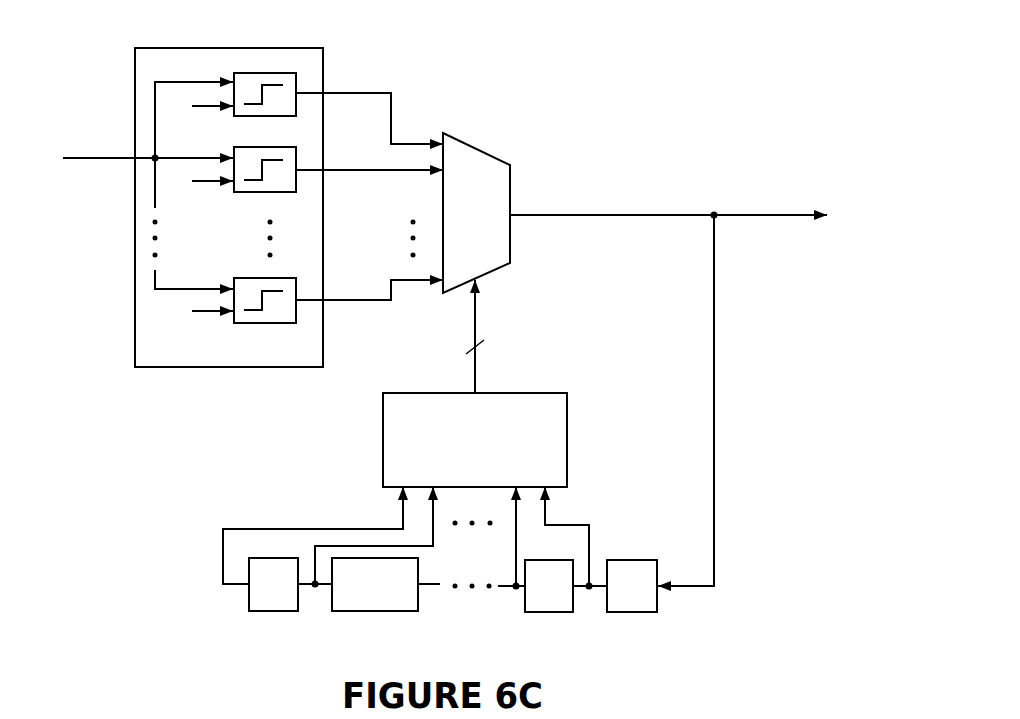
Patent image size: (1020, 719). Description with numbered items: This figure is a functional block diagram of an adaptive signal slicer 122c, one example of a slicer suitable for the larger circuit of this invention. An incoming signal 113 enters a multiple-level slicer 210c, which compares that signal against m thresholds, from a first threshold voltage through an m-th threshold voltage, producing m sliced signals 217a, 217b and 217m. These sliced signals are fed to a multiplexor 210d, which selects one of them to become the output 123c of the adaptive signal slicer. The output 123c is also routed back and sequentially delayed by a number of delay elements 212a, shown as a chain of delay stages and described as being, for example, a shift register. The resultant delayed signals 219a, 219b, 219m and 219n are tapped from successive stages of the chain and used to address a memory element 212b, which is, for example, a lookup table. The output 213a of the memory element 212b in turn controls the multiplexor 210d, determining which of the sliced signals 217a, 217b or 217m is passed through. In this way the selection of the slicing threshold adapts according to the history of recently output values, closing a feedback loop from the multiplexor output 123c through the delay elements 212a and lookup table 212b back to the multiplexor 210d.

The input signal line 113 is at (96, 156).
The multiple-level slicer 210c is at (200, 47).
The sliced signal 217a is at (345, 92).
The sliced signal 217b is at (347, 168).
The sliced signal 217m is at (348, 297).
The multiplexor 210d is at (488, 148).
The output 123c is at (765, 213).
The output 213a is at (478, 318).
The memory element 212b is at (570, 432).
The adaptive signal slicer 122c is at (240, 445).
The delayed signal 219n is at (262, 528).
The delayed signal 219m is at (430, 522).
The delayed signal 219b is at (520, 520).
The delayed signal 219a is at (590, 545).
The delay elements 212a is at (283, 612).